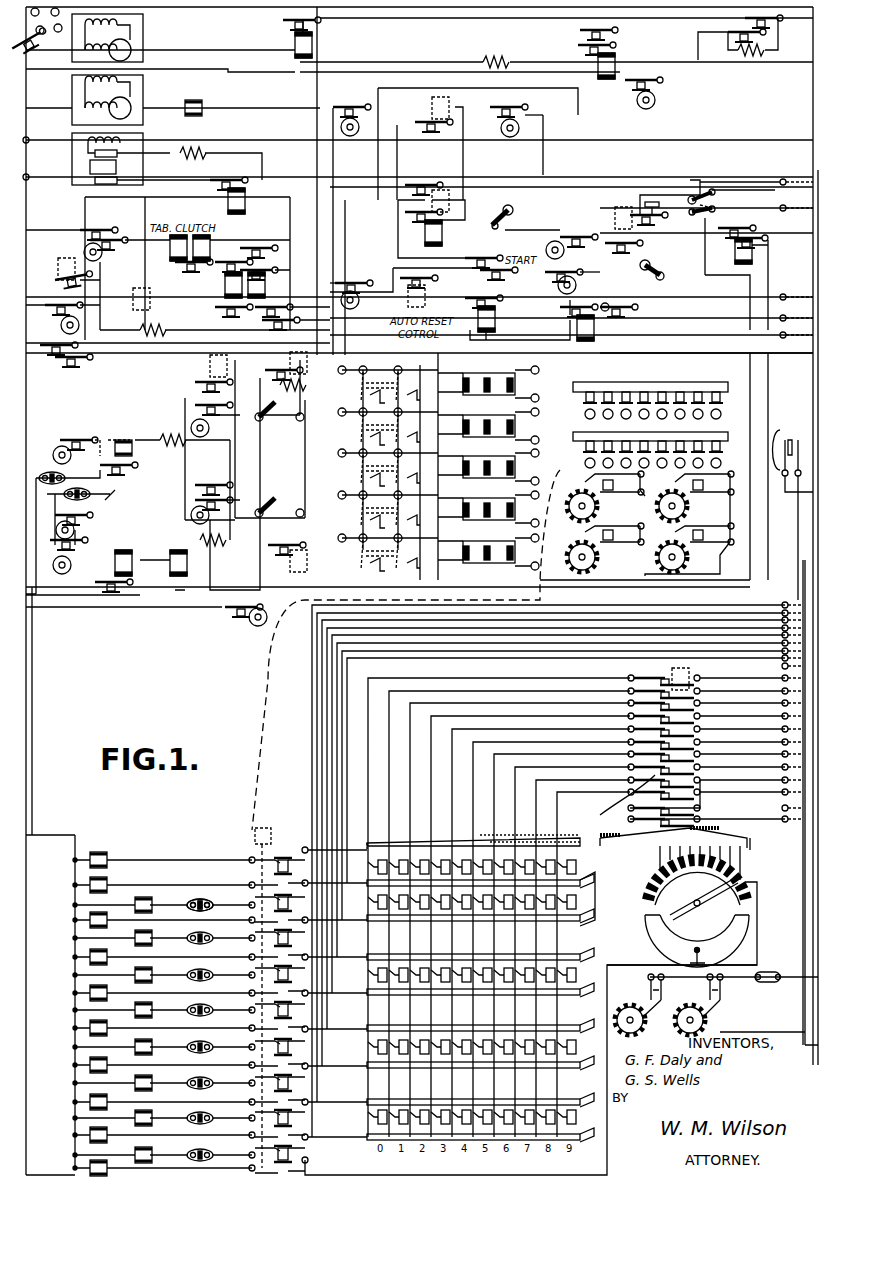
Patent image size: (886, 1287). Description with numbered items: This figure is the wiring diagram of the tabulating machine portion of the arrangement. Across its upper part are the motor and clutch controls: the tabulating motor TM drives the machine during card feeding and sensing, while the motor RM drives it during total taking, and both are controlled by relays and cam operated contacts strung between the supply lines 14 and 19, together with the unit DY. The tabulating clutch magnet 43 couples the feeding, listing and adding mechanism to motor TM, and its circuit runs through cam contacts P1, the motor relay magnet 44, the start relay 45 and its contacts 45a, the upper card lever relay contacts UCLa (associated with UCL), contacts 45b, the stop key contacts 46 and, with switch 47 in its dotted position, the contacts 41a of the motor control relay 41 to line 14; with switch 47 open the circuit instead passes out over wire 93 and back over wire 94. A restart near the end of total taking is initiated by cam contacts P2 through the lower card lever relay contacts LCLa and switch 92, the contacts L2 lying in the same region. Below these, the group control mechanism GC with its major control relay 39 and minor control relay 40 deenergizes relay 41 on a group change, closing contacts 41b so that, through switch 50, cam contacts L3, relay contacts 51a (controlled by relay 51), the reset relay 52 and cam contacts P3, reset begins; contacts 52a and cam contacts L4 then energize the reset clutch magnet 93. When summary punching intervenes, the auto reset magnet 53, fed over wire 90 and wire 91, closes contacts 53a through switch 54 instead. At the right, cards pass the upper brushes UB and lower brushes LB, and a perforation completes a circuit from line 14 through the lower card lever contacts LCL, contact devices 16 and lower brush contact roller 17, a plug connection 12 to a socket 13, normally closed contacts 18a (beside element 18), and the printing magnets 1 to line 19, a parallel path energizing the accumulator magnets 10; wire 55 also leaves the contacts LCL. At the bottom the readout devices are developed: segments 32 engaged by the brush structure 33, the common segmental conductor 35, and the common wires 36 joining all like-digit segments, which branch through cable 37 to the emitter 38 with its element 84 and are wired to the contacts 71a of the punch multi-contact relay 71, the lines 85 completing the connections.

The printing magnet 1 is at (98, 985).
The accumulator magnet 10 is at (150, 975).
The plug connection 12 is at (268, 695).
The socket 13 is at (197, 900).
The line 14 is at (805, 262).
The contact devices 16 is at (617, 488).
The lower brush contact roller 17 is at (712, 432).
The switch bank 18 is at (272, 845).
The normally closed contacts 18a is at (284, 900).
The line 19 is at (26, 94).
The segments 32 is at (440, 925).
The brush structure 33 is at (600, 912).
The common segmental conductor 35 is at (385, 878).
The common conducting wire 36 is at (455, 778).
The cable 37 is at (625, 840).
The emitter 38 is at (650, 900).
The major control relay 39 is at (130, 455).
The minor control relay 40 is at (130, 560).
The motor control relay 41 is at (735, 258).
The relay contacts 41a is at (755, 234).
The relay contacts 41b is at (735, 225).
The tabulating clutch magnet 43 is at (220, 248).
The motor relay magnet 44 is at (314, 50).
The start relay magnet 45 is at (440, 232).
The start relay contacts 45a is at (405, 220).
The start relay contacts 45b is at (405, 190).
The stop key contacts 46 is at (658, 212).
The switch 47 is at (705, 190).
The switch 50 is at (660, 268).
The relay magnet 51 is at (400, 300).
The relay contacts 51a is at (410, 276).
The reset relay 52 is at (492, 320).
The reset relay contacts 52a is at (475, 298).
The auto reset magnet 53 is at (595, 340).
The auto reset contacts 53a is at (565, 312).
The switch 54 is at (628, 305).
The wire 55 is at (805, 573).
The punch multi-contact relay 71 is at (690, 680).
The multi-contact relay contacts 71a is at (660, 762).
The brush 84 is at (755, 822).
The wires 85 is at (335, 750).
The wire 90 is at (735, 345).
The wire 91 is at (712, 335).
The switch 92 is at (491, 216).
The reset clutch magnet 93 is at (778, 205).
The wire 94 is at (748, 185).
The tabulating motor TM is at (107, 38).
The motor RM is at (130, 103).
The delay unit DY is at (151, 159).
The upper clutch relay UCL is at (430, 108).
The upper card lever relay contacts UCLa is at (455, 111).
The lamp 2 L2 is at (522, 110).
The cam contacts L3 is at (585, 275).
The cam contacts L4 is at (372, 290).
The cam contacts P1 is at (110, 235).
The cam contacts P2 is at (565, 232).
The cam contacts P3 is at (62, 318).
The lower card lever contacts LCL is at (625, 205).
The lower card lever relay contacts LCLa is at (643, 243).
The group control mechanism GC is at (246, 471).
The upper analyzing brushes UB is at (662, 392).
The lower analyzing brushes LB is at (590, 452).